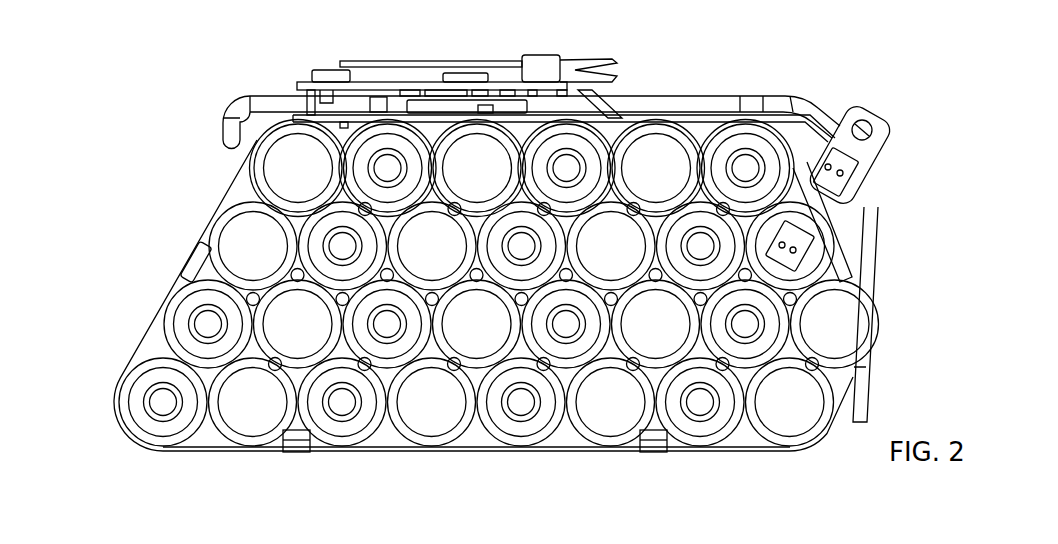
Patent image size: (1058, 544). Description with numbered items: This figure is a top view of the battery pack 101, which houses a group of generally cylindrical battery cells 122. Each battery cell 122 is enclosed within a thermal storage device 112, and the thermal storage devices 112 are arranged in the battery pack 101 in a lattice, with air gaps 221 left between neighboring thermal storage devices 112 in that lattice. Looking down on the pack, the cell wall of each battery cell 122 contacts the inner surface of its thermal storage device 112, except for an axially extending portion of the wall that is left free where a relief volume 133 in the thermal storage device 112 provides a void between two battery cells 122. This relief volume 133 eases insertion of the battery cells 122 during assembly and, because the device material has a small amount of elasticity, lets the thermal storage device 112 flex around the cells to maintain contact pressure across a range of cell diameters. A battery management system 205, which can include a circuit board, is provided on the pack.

The battery pack 101 is at (133, 70).
The battery management system 205 is at (420, 72).
The relief volume 133 is at (260, 198).
The thermal storage device 112 is at (172, 440).
The air gap 221 is at (388, 390).
The battery cell 122 is at (613, 415).